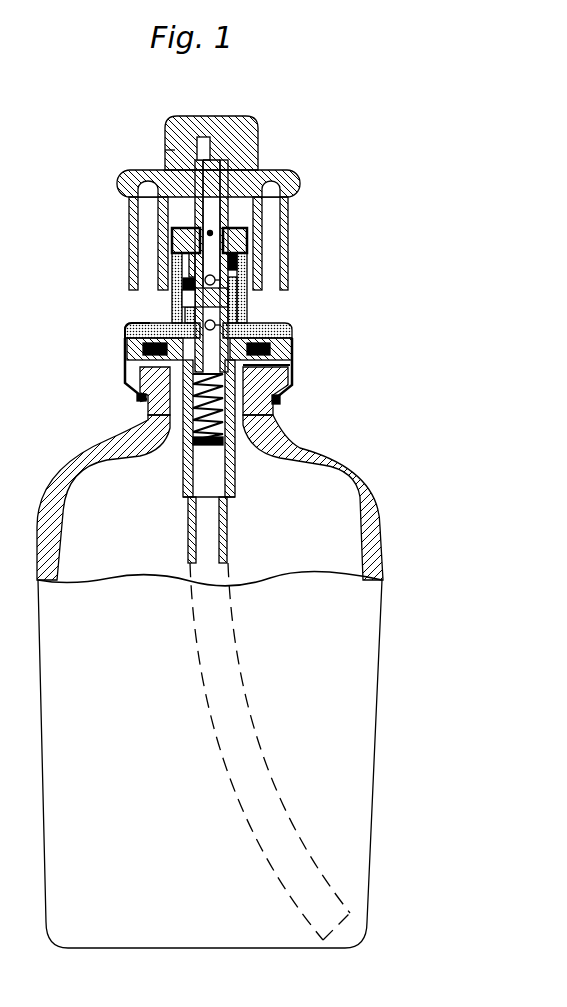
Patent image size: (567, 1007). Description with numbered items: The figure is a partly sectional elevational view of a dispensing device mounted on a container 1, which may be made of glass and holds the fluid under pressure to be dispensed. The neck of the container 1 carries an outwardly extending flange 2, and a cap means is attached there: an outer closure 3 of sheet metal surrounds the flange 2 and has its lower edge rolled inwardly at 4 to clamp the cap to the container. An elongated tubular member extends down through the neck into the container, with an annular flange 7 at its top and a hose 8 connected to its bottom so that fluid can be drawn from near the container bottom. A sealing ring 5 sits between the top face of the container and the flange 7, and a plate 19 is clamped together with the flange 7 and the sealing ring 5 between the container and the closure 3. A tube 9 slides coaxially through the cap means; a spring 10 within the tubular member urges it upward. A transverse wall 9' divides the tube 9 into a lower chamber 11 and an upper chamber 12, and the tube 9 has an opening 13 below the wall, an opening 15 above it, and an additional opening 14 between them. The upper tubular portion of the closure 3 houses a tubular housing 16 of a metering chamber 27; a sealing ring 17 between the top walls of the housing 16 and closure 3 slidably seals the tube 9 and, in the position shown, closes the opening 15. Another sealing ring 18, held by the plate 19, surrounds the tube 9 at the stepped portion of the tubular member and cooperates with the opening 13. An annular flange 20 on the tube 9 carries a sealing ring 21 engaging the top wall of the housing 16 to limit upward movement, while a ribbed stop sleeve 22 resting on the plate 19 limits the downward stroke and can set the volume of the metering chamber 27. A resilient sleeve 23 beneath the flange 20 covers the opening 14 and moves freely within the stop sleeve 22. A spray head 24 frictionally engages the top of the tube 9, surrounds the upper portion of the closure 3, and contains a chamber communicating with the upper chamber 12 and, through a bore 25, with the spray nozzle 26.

The container 1 is at (365, 487).
The flange 2 is at (262, 380).
The outer closure 3 is at (293, 378).
The rolled lower edge portion 4 is at (278, 402).
The sealing ring 5 is at (145, 386).
The annular flange 7 is at (294, 345).
The hose 8 is at (227, 548).
The tube 9 is at (230, 227).
The transverse wall 9' is at (278, 300).
The spring 10 is at (230, 452).
The lower chamber 11 is at (247, 364).
The upper chamber 12 is at (217, 168).
The opening 13 is at (235, 320).
The additional opening 14 is at (243, 264).
The opening 15 is at (250, 240).
The tubular housing 16 is at (180, 296).
The sealing ring 17 is at (183, 232).
The sealing ring 18 is at (152, 398).
The plate 19 is at (158, 342).
The annular flange 20 is at (188, 275).
The sealing ring 21 is at (173, 257).
The stop sleeve 22 is at (165, 318).
The resilient sleeve 23 is at (240, 290).
The spray head 24 is at (240, 140).
The bore 25 is at (194, 118).
The spray nozzle 26 is at (175, 143).
The metering chamber 27 is at (167, 286).